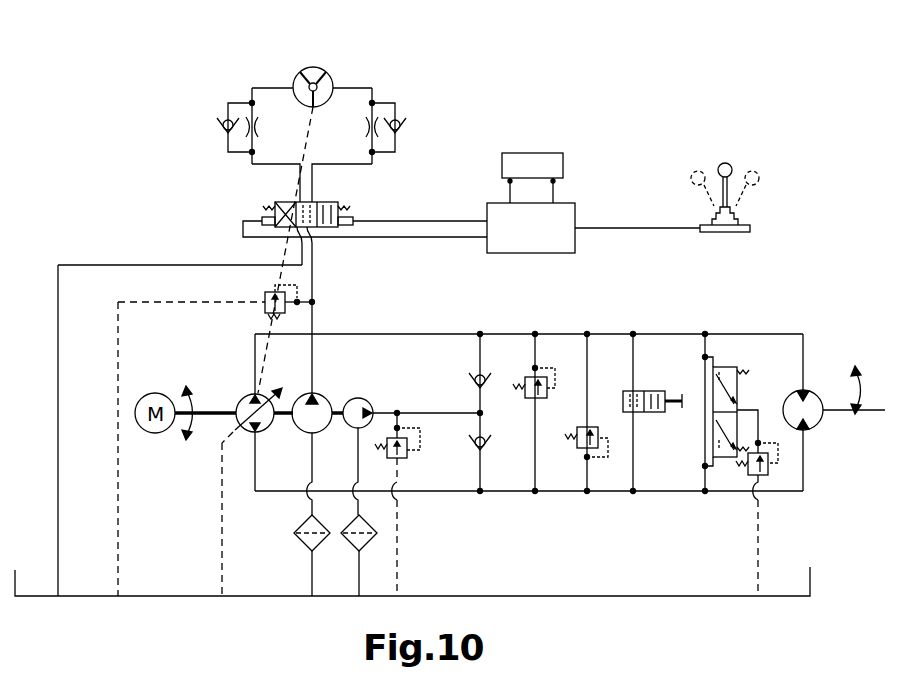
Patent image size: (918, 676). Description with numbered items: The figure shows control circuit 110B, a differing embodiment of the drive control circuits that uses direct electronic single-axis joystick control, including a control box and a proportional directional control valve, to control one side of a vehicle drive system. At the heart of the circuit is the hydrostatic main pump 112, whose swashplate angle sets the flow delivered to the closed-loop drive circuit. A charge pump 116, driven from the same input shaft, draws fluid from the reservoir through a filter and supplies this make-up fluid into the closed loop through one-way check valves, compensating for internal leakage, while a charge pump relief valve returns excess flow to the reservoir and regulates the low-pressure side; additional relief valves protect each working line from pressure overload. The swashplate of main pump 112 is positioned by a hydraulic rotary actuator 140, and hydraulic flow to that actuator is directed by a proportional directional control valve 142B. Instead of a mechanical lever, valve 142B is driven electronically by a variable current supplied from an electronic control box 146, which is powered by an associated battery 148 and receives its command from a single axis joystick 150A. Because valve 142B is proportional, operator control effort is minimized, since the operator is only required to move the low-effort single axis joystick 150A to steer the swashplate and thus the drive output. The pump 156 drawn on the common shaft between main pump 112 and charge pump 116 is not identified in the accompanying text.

The hydraulic control system 110B is at (567, 52).
The variable displacement pump 112 is at (238, 402).
The charge pump 116 is at (362, 398).
The pilot control valve 140 is at (331, 78).
The directional control valve 142B is at (275, 204).
The controller 146 is at (523, 247).
The sensor unit 148 is at (543, 163).
The joystick control lever 150A is at (723, 165).
The fixed displacement pump 156 is at (322, 404).